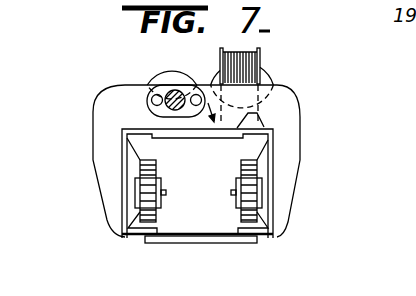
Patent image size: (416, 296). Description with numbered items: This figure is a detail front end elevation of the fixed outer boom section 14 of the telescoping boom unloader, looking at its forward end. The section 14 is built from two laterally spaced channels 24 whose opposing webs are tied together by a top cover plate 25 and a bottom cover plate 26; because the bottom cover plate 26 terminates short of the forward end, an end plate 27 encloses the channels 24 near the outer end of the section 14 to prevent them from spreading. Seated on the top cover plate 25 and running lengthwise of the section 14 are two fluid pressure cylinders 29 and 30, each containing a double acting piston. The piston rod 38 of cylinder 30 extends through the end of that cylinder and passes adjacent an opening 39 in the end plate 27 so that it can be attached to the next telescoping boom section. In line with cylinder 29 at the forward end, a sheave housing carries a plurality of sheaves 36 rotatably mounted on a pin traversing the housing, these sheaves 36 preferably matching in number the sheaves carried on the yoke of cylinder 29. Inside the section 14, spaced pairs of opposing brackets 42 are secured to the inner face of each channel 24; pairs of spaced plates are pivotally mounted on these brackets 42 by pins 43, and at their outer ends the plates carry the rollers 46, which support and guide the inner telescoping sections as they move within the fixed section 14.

The fixed boom section 14 is at (312, 125).
The channels 24 is at (122, 152).
The top cover plate 25 is at (203, 129).
The bottom cover plate 26 is at (181, 234).
The end plate 27 is at (297, 91).
The fluid pressure cylinder 29 is at (209, 76).
The fluid pressure cylinder 30 is at (157, 77).
The sheaves 36 is at (261, 55).
The piston rod 38 is at (148, 88).
The opening 39 is at (155, 123).
The brackets 42 is at (130, 202).
The pins 43 is at (231, 192).
The rollers 46 is at (241, 166).